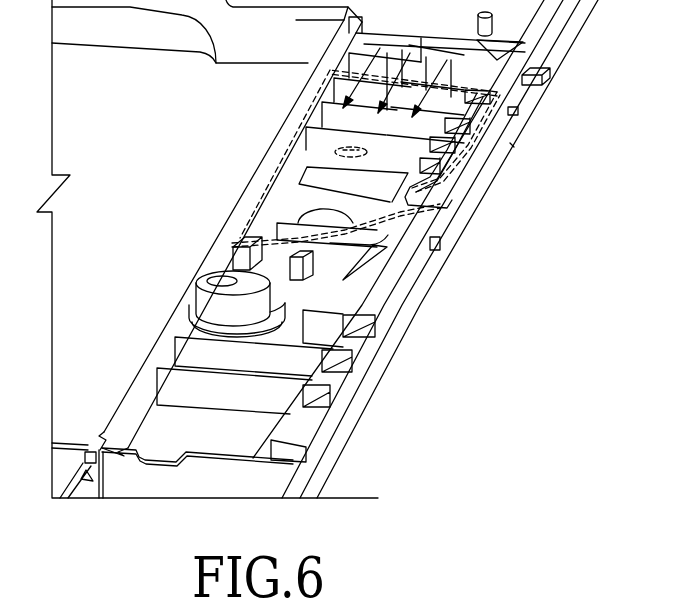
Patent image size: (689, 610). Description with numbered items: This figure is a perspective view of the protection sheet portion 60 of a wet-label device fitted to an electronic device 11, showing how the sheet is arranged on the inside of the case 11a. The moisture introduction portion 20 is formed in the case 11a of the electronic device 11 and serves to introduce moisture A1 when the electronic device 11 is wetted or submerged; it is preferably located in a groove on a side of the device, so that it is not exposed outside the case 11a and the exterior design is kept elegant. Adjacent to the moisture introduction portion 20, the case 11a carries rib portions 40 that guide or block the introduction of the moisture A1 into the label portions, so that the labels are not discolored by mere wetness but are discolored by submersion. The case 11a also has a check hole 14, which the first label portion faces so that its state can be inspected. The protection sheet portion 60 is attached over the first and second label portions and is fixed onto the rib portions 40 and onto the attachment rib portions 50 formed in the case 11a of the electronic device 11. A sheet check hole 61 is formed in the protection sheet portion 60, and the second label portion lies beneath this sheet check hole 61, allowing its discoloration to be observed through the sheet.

The electronic device 11 is at (366, 441).
The case 11a is at (367, 383).
The check hole 14 is at (325, 217).
The moisture introduction portion 20 is at (394, 306).
The rib portions 40 is at (385, 235).
The attachment rib portions 50 is at (290, 265).
The protection sheet portion 60 is at (445, 155).
The sheet check hole 61 is at (340, 147).
The moisture A1 is at (472, 95).